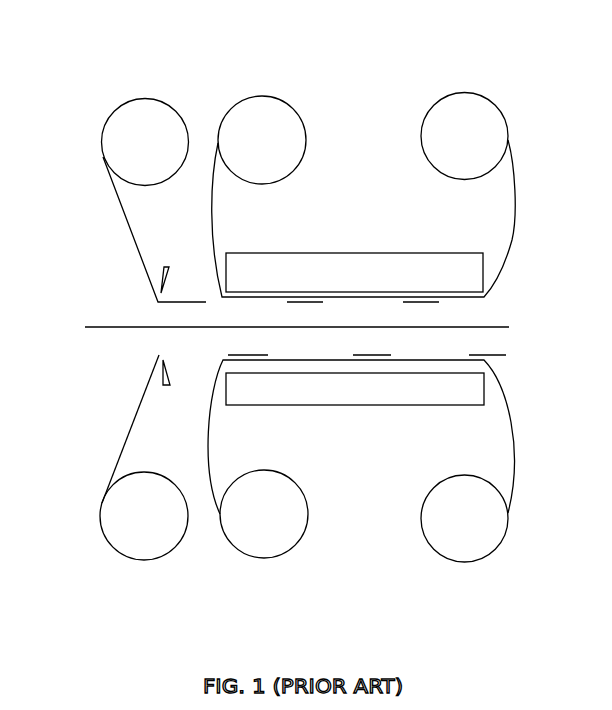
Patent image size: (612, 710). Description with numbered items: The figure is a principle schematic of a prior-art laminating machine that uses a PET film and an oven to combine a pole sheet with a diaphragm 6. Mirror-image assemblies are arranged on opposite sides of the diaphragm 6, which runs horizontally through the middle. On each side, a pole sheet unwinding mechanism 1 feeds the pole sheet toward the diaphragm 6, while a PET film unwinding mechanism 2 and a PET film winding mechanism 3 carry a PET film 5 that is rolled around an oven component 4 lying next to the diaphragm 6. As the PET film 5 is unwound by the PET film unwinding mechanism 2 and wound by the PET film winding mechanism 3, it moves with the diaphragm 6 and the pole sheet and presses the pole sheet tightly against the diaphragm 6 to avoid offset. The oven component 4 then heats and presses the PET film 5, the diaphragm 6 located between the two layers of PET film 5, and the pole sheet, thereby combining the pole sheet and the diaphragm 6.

The pole sheet unwinding mechanism 1 is at (123, 154).
The PET film unwinding mechanism 2 is at (285, 110).
The PET film winding mechanism 3 is at (459, 112).
The oven component 4 is at (361, 268).
The PET film 5 is at (514, 222).
The diaphragm 6 is at (509, 327).